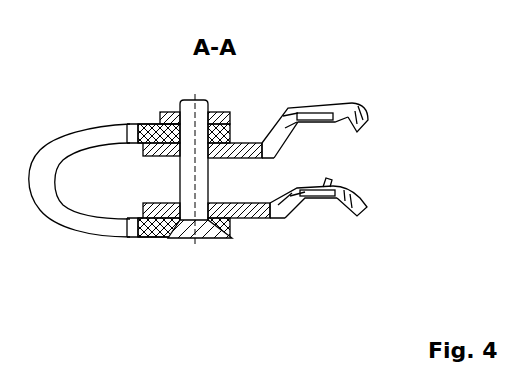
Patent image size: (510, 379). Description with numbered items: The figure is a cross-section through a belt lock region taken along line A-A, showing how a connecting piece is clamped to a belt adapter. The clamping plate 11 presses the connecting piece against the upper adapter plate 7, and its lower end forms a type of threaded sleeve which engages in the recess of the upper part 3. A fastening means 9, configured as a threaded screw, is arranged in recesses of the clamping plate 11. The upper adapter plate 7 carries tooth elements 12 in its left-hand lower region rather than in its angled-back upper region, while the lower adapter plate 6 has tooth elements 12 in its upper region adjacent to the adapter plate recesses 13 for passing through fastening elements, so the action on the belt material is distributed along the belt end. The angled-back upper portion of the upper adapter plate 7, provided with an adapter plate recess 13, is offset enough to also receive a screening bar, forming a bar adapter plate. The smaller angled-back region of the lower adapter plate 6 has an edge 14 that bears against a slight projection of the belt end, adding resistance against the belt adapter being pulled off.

The upper part 3 is at (152, 124).
The lower adapter plate 6 is at (269, 221).
The upper adapter plate 7 is at (278, 124).
The fastening means 9 is at (178, 172).
The clamping plate 11 is at (170, 110).
The tooth elements 12 is at (250, 160).
The adapter plate recesses 13 is at (322, 91).
The edge 14 is at (273, 190).